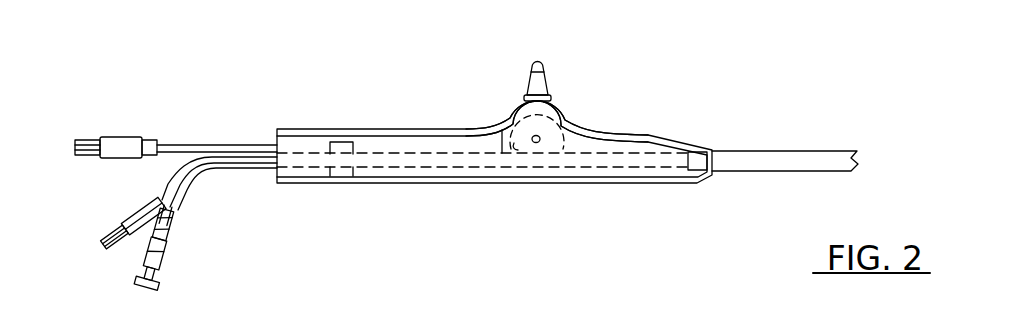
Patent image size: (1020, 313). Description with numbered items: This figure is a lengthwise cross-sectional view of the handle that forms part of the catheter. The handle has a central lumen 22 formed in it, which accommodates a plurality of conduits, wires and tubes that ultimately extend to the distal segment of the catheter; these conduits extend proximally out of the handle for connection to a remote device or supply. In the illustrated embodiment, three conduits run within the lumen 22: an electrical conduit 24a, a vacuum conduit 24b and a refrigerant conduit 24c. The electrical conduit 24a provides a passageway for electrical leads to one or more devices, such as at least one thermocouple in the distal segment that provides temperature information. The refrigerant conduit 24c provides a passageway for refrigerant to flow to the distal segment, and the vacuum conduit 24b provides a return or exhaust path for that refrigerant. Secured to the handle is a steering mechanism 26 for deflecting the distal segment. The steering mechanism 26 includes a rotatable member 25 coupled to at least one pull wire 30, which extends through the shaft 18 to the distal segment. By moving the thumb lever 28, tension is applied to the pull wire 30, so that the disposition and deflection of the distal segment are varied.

The shaft 18 is at (783, 158).
The central lumen 22 is at (392, 157).
The electrical conduit 24a is at (183, 148).
The vacuum conduit 24b is at (118, 230).
The refrigerant conduit 24c is at (162, 270).
The rotatable member 25 is at (555, 133).
The steering mechanism 26 is at (497, 95).
The thumb lever 28 is at (533, 80).
The pull wire 30 is at (600, 153).